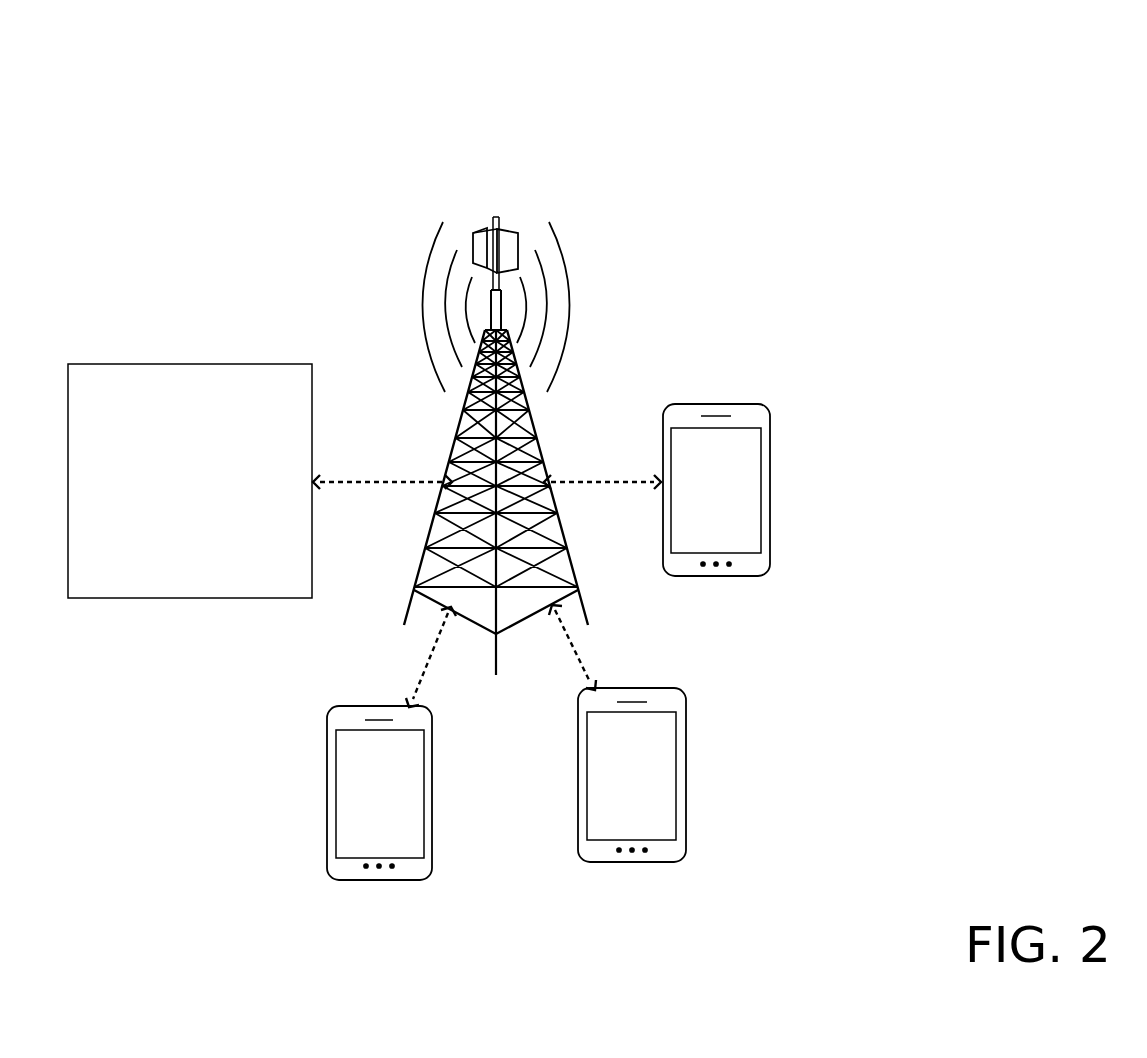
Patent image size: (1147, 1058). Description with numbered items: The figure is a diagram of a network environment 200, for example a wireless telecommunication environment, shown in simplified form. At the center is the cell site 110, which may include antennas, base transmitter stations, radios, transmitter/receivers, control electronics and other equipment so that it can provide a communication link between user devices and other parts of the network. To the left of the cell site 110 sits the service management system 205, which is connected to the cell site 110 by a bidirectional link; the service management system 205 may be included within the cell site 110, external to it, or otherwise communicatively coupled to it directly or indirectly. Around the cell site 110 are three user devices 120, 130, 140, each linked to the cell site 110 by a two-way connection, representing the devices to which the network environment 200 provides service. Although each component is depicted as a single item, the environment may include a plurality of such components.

The network environment 200 is at (959, 112).
The cell site 110 is at (459, 453).
The service management system 205 is at (190, 481).
The user device 120 is at (379, 793).
The user device 130 is at (632, 775).
The user device 140 is at (716, 490).